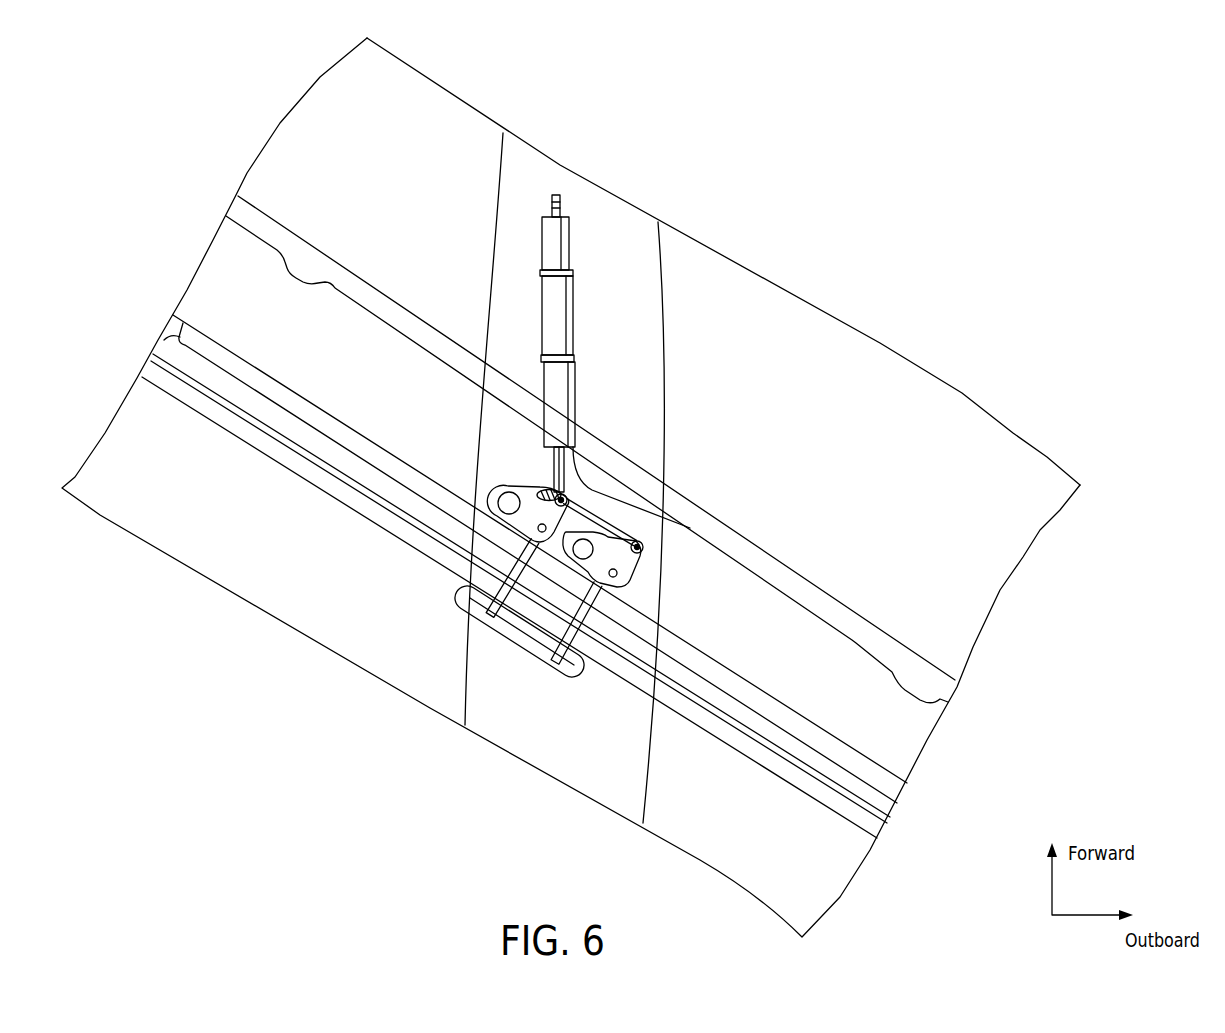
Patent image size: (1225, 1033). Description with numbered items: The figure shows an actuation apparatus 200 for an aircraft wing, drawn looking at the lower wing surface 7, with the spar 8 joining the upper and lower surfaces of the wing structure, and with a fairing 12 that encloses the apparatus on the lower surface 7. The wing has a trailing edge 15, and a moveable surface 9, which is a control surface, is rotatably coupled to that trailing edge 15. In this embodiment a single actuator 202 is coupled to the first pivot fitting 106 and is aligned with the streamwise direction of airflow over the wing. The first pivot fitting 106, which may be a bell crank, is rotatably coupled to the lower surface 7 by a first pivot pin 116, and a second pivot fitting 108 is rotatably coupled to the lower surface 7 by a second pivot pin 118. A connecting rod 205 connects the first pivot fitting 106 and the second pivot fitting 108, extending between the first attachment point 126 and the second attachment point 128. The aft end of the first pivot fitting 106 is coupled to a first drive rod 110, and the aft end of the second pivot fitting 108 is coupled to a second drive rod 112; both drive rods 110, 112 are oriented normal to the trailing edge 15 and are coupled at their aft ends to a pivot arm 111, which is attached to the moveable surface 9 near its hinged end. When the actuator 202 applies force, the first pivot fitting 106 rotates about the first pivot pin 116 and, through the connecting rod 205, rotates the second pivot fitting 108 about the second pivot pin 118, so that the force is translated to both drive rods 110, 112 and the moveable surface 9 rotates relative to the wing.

The lower wing surface 7 is at (928, 420).
The spar 8 is at (897, 793).
The moveable surface 9 is at (124, 446).
The fairing 12 is at (497, 175).
The trailing edge 15 is at (147, 349).
The first pivot fitting 106 is at (523, 491).
The second pivot fitting 108 is at (623, 560).
The first drive rod 110 is at (512, 630).
The pivot arm 111 is at (540, 655).
The second drive rod 112 is at (590, 623).
The first pivot pin 116 is at (494, 513).
The second pivot pin 118 is at (587, 564).
The first attachment point 126 is at (547, 493).
The second attachment point 128 is at (660, 548).
The actuation apparatus 200 is at (796, 194).
The actuator 202 is at (552, 292).
The connecting rod 205 is at (572, 503).